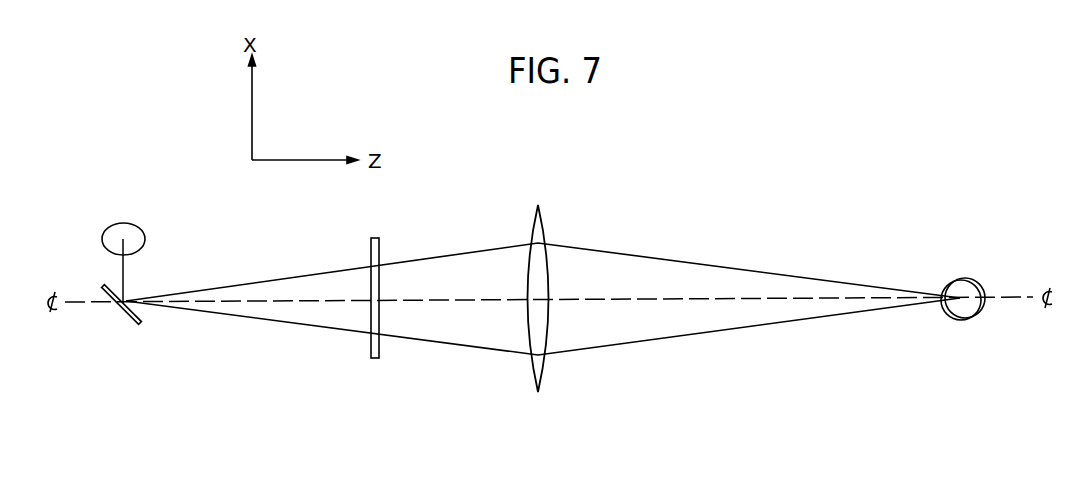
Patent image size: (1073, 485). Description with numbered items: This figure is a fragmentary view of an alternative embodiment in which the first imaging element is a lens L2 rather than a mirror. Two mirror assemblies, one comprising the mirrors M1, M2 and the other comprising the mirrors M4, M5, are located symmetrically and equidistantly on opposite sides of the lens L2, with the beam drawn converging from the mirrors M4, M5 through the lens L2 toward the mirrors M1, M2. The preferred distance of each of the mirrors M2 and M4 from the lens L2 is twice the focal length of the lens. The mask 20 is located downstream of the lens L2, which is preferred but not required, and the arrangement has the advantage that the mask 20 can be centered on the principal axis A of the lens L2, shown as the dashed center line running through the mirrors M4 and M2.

The principal axis A is at (298, 298).
The mirror M5 is at (133, 233).
The mirror M4 is at (122, 316).
The mask 20 is at (371, 258).
The lens L2 is at (543, 233).
The mirror M1 is at (952, 291).
The mirror M2 is at (962, 278).